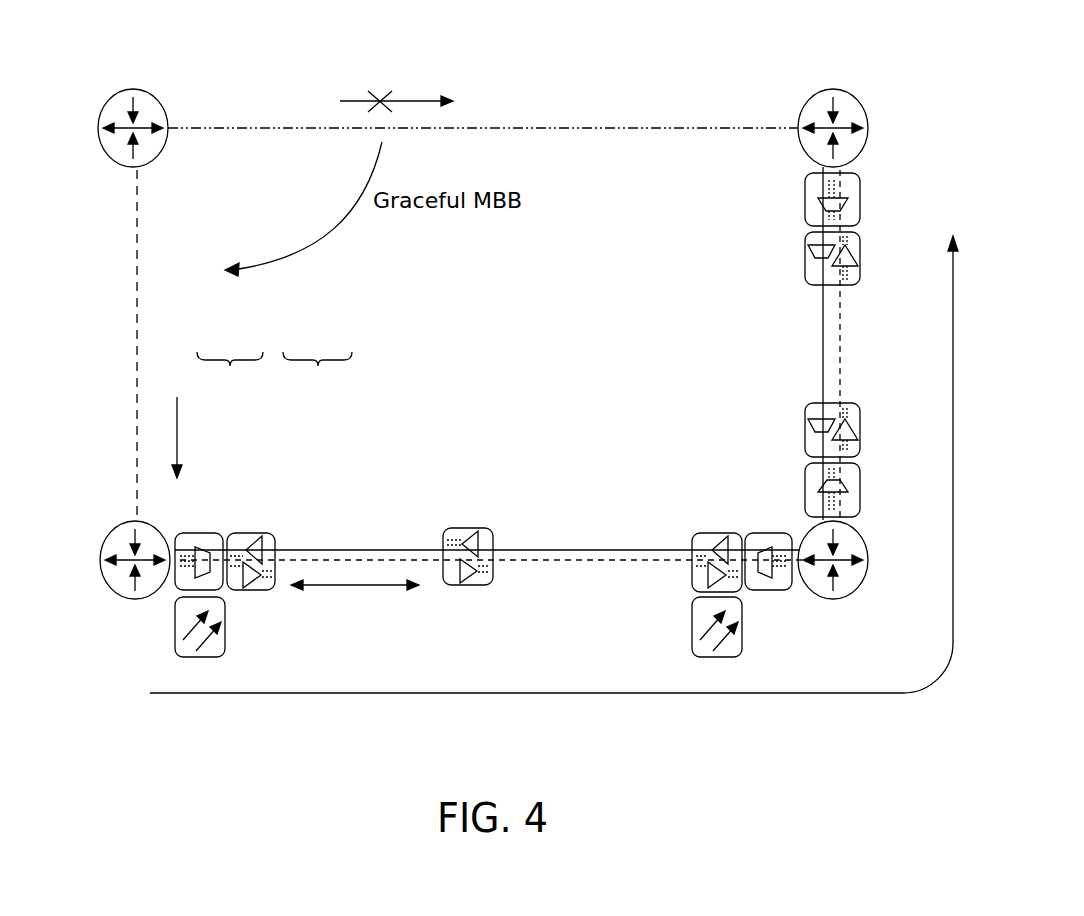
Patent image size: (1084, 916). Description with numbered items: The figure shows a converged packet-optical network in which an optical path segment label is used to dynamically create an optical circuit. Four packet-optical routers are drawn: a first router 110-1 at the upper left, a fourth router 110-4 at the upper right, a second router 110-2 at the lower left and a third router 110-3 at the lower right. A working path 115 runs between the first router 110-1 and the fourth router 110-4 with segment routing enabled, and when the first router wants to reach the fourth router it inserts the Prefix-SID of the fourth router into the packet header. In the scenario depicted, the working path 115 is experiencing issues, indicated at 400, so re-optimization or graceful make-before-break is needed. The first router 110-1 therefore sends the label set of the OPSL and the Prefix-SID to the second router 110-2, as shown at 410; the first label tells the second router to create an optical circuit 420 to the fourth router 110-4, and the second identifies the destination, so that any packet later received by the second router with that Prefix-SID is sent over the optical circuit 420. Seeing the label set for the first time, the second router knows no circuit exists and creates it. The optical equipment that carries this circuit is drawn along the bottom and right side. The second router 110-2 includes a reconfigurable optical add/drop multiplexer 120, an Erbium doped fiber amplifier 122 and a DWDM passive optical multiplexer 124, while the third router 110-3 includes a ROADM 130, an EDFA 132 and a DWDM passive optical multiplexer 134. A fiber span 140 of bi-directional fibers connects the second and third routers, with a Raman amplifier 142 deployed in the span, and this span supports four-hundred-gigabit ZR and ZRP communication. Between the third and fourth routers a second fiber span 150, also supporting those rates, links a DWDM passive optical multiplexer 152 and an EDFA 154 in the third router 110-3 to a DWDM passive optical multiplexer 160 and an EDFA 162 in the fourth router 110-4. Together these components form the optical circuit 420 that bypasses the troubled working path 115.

The router R1 110-1 is at (160, 151).
The router R2 110-2 is at (103, 578).
The router R3 110-3 is at (862, 572).
The router R4 110-4 is at (805, 151).
The working path 115 is at (246, 128).
The working path issue 400 is at (455, 81).
The label set transmission 410 is at (177, 438).
The optical circuit 420 is at (812, 696).
The reconfigurable optical add/drop multiplexer (ROADM) 120 is at (205, 657).
The Erbium Doped Fiber Amplifier (EDFA) 122 is at (278, 546).
The DWDM passive optical multiplexer 124 is at (200, 532).
The ROADM 130 is at (715, 648).
The EDFA 132 is at (703, 533).
The DWDM passive optical multiplexer 134 is at (760, 533).
The fiber span 140 is at (583, 548).
The Raman amplifier (EDRA) 142 is at (462, 586).
The fiber span 150 is at (833, 362).
The DWDM passive optical multiplexer 152 is at (856, 503).
The EDFA 154 is at (856, 445).
The DWDM passive optical multiplexer 160 is at (856, 207).
The EDFA 162 is at (856, 250).